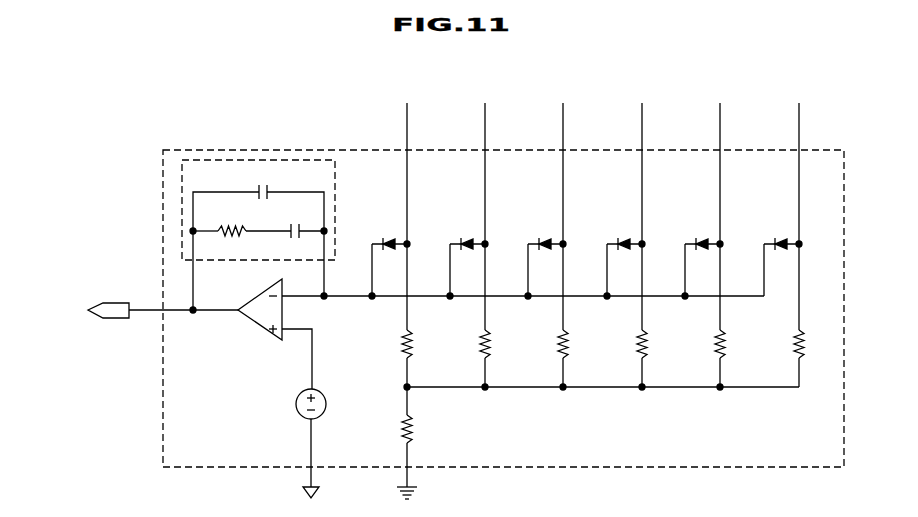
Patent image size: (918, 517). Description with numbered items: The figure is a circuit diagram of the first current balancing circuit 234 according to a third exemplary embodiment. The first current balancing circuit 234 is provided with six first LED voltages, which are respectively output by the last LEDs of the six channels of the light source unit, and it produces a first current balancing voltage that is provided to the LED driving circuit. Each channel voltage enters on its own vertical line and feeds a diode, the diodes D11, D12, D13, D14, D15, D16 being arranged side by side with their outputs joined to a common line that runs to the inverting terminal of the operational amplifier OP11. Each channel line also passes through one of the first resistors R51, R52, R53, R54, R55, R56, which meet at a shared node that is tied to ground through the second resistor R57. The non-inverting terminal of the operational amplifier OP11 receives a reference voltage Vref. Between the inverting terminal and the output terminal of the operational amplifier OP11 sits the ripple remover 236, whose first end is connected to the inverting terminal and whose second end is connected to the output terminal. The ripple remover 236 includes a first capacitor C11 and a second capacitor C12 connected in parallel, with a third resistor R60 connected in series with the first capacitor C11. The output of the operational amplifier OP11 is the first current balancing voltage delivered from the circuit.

The first current balancing circuit 234 is at (247, 150).
The ripple remover 236 is at (163, 197).
The second capacitor C12 is at (263, 182).
The third resistor R60 is at (231, 219).
The first capacitor C11 is at (295, 220).
The operational amplifier OP11 is at (245, 309).
The reference voltage Vref is at (290, 404).
The diode D11 is at (388, 231).
The diode D12 is at (466, 231).
The diode D13 is at (544, 231).
The diode D14 is at (623, 231).
The diode D15 is at (701, 231).
The diode D16 is at (780, 231).
The first resistor R51 is at (425, 344).
The first resistor R52 is at (503, 344).
The first resistor R53 is at (581, 344).
The first resistor R54 is at (660, 344).
The first resistor R55 is at (738, 344).
The first resistor R56 is at (817, 344).
The second resistor R57 is at (425, 429).